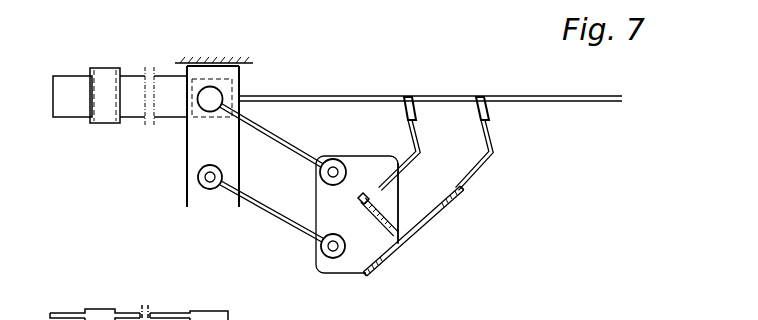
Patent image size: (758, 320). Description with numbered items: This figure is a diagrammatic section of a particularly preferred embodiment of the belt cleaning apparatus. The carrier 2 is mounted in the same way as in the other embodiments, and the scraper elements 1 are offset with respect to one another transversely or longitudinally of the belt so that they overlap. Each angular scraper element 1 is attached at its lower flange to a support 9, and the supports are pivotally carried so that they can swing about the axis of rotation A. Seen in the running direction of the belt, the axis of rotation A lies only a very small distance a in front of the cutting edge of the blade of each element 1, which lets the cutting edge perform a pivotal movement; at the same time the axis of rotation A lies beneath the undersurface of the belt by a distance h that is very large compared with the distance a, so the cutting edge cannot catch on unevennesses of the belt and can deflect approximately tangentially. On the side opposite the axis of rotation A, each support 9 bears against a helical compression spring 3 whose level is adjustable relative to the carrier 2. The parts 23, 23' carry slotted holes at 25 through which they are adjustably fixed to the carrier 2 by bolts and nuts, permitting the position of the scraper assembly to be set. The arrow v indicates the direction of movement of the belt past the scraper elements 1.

The scraper element 1 is at (488, 100).
The carrier 2 is at (364, 262).
The helical compression spring 3 is at (459, 195).
The support 9 is at (487, 165).
The part 23 is at (413, 231).
The part 23' is at (360, 203).
The slotted holes 25 is at (386, 262).
The axis of rotation A is at (457, 189).
The distance a is at (477, 125).
The distance h is at (445, 190).
The velocity direction v is at (637, 97).